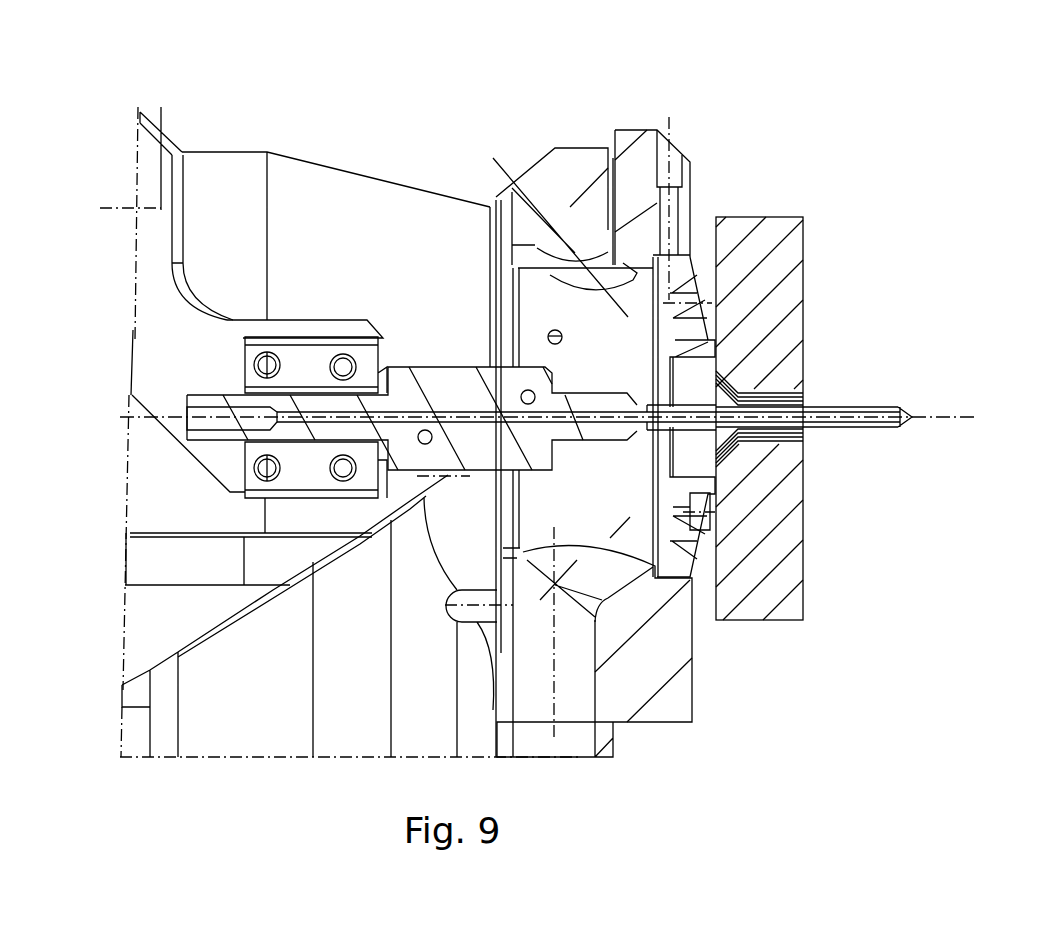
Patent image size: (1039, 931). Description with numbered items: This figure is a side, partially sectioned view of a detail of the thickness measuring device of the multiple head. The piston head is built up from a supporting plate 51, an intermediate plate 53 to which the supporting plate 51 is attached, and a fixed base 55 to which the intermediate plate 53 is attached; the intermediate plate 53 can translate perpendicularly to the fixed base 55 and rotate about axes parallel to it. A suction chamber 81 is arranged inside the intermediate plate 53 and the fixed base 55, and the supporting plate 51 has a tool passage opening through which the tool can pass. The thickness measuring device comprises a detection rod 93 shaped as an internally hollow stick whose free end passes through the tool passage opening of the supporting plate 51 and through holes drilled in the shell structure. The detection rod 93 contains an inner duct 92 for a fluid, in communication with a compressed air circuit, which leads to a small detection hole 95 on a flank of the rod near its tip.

The suction chamber 81 is at (535, 295).
The fixed base 55 is at (572, 147).
The intermediate plate 53 is at (634, 130).
The supporting plate 51 is at (740, 217).
The inner duct 92 is at (830, 412).
The detection hole 95 is at (888, 407).
The detection rod 93 is at (872, 428).